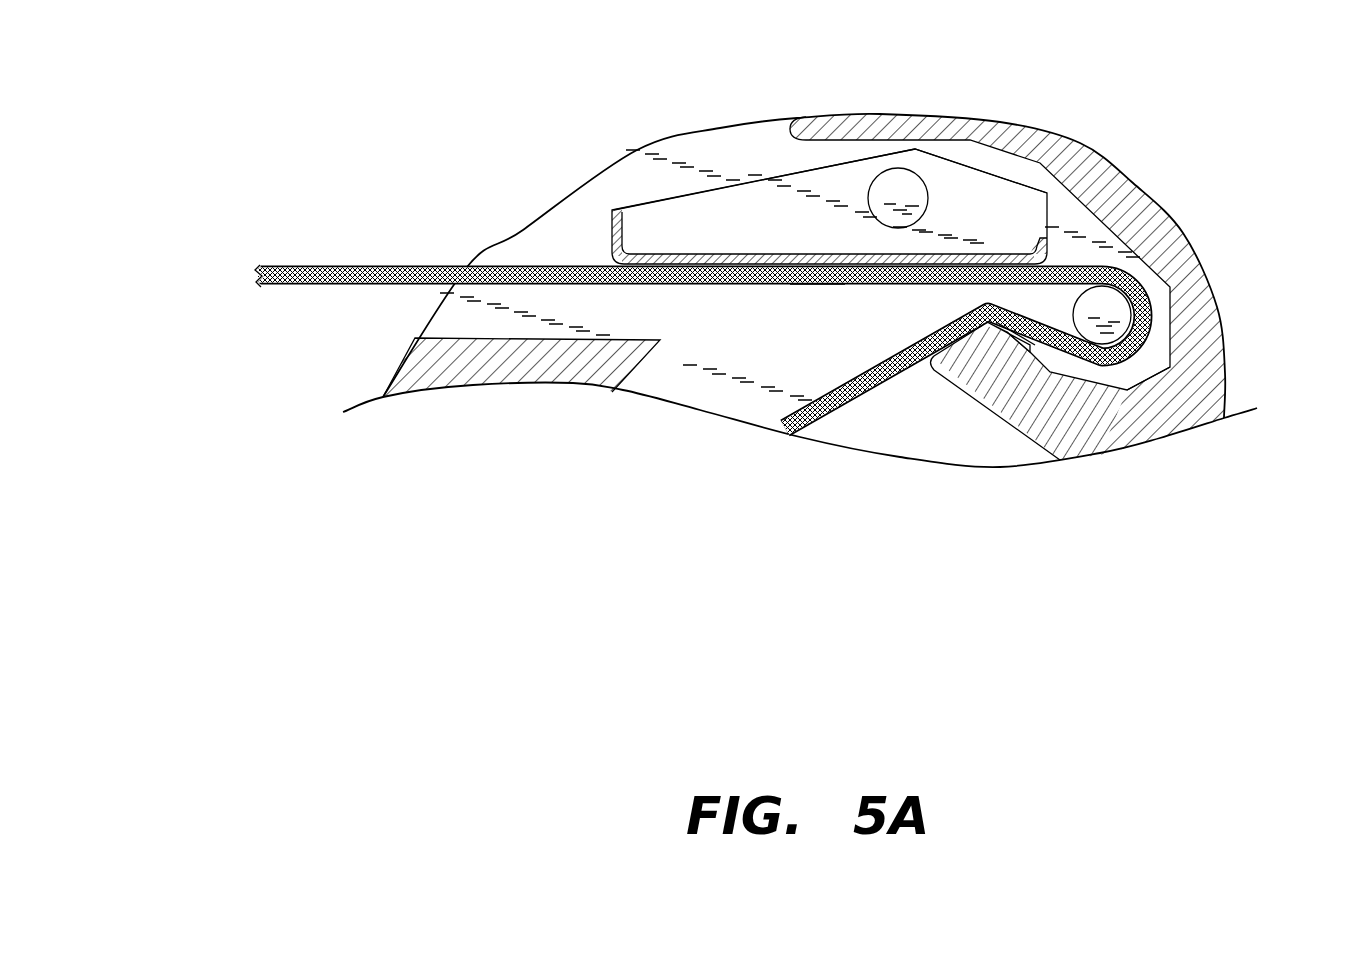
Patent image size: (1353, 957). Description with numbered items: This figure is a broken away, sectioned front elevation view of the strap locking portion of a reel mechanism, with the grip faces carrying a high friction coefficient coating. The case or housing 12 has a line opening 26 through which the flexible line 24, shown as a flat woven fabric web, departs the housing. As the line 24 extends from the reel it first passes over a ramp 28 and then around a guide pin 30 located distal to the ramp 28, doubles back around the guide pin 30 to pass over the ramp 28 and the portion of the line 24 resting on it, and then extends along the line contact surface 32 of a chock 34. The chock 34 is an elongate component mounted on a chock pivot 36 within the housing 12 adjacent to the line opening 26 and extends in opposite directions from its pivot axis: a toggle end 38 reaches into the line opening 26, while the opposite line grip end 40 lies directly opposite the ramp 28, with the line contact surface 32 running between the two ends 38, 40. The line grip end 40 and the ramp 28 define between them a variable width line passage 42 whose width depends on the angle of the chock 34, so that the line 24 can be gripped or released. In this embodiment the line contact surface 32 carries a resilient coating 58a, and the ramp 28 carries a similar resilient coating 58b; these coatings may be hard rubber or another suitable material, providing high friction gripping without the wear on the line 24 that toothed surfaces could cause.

The case or housing 12 is at (1225, 350).
The flexible line 24 is at (350, 288).
The line opening 26 is at (523, 232).
The ramp 28 is at (935, 367).
The guide pin 30 is at (1112, 308).
The line contact surface 32 is at (697, 286).
The chock 34 is at (782, 167).
The chock pivot 36 is at (902, 178).
The toggle end 38 is at (633, 200).
The line grip end 40 is at (1050, 207).
The variable width line passage 42 is at (990, 296).
The resilient coating 58a is at (813, 286).
The resilient coating 58b is at (1020, 313).